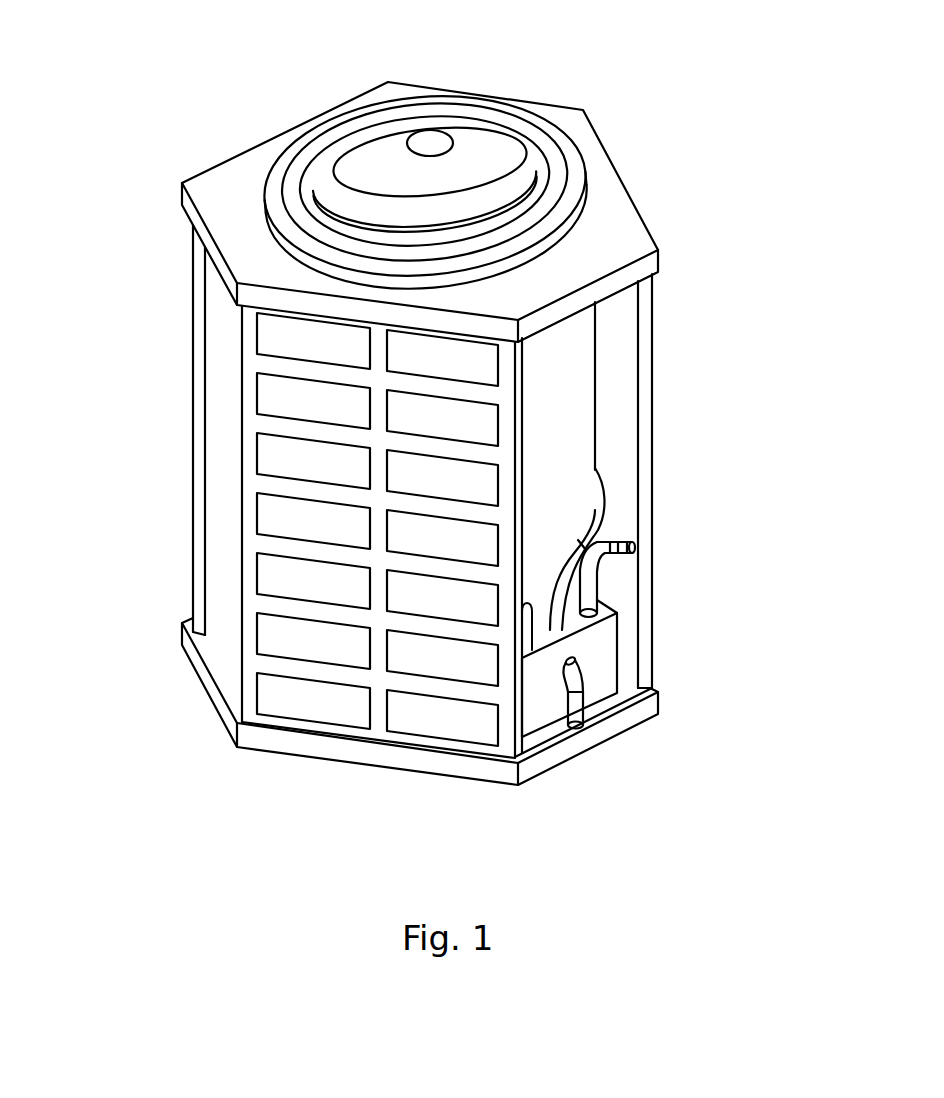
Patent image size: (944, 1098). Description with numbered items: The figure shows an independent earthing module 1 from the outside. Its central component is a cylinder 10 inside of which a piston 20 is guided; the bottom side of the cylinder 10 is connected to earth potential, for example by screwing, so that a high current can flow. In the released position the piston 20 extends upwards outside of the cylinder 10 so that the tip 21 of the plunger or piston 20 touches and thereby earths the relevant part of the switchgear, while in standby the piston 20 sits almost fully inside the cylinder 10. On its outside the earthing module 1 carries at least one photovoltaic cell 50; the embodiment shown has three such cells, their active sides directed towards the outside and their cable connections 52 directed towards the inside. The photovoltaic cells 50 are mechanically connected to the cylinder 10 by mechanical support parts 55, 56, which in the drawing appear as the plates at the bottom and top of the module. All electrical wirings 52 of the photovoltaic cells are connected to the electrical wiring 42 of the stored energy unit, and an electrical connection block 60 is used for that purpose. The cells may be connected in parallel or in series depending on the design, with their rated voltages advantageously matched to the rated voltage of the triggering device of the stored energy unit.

The earthing module 1 is at (452, 435).
The cylinder 10 is at (565, 388).
The piston 20 is at (363, 197).
The tip 21 is at (430, 147).
The electrical wiring 42 is at (577, 698).
The photovoltaic cell 50 is at (220, 465).
The cable connections 52 is at (590, 575).
The mechanical support part 55 is at (538, 763).
The mechanical support part 56 is at (610, 232).
The electrical connection block 60 is at (600, 652).